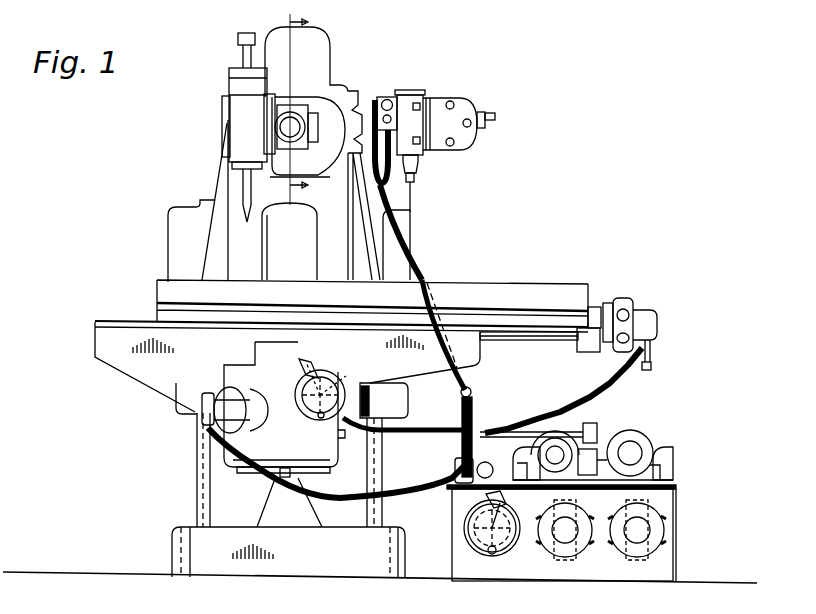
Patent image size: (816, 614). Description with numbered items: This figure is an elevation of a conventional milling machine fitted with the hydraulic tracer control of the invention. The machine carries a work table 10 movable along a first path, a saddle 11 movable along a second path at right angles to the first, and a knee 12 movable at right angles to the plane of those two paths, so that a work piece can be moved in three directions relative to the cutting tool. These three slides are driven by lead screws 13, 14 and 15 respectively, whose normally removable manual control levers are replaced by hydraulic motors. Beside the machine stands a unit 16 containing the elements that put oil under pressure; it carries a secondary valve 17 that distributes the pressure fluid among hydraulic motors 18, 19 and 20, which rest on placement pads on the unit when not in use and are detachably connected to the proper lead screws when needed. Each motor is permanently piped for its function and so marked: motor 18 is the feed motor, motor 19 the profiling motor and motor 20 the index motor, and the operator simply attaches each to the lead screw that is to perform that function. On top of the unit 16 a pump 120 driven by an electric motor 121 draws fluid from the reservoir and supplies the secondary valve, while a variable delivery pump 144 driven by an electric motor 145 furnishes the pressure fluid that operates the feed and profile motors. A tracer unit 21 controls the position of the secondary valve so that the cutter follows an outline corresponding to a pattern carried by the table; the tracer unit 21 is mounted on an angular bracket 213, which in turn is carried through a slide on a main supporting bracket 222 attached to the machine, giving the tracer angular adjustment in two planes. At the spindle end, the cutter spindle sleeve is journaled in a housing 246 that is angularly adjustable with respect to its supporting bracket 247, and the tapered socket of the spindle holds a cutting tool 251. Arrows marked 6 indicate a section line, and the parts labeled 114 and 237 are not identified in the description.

The section line 6- 6 is at (309, 109).
The work table 10 is at (578, 273).
The saddle 11 is at (170, 366).
The knee 12 is at (275, 440).
The lead screw 13 is at (538, 340).
The lead screw 14 is at (313, 425).
The lead screw 15 is at (287, 468).
The unit 16 is at (678, 503).
The secondary valve 17 is at (480, 478).
The hydraulic motor 18 is at (205, 418).
The hydraulic motor 19 is at (638, 323).
The hydraulic motor 20 is at (500, 552).
The tracer unit 21 is at (405, 97).
The tracer stylus 114 is at (413, 198).
The pump 120 is at (348, 386).
The electric motor 121 is at (630, 435).
The variable delivery pump 144 is at (550, 413).
The electric motor 145 is at (572, 427).
The angular bracket 213 is at (464, 145).
The main supporting bracket 222 is at (481, 130).
The spindle head housing 237 is at (318, 58).
The housing 246 is at (236, 84).
The supporting bracket 247 is at (312, 97).
The cutting tool 251 is at (244, 182).